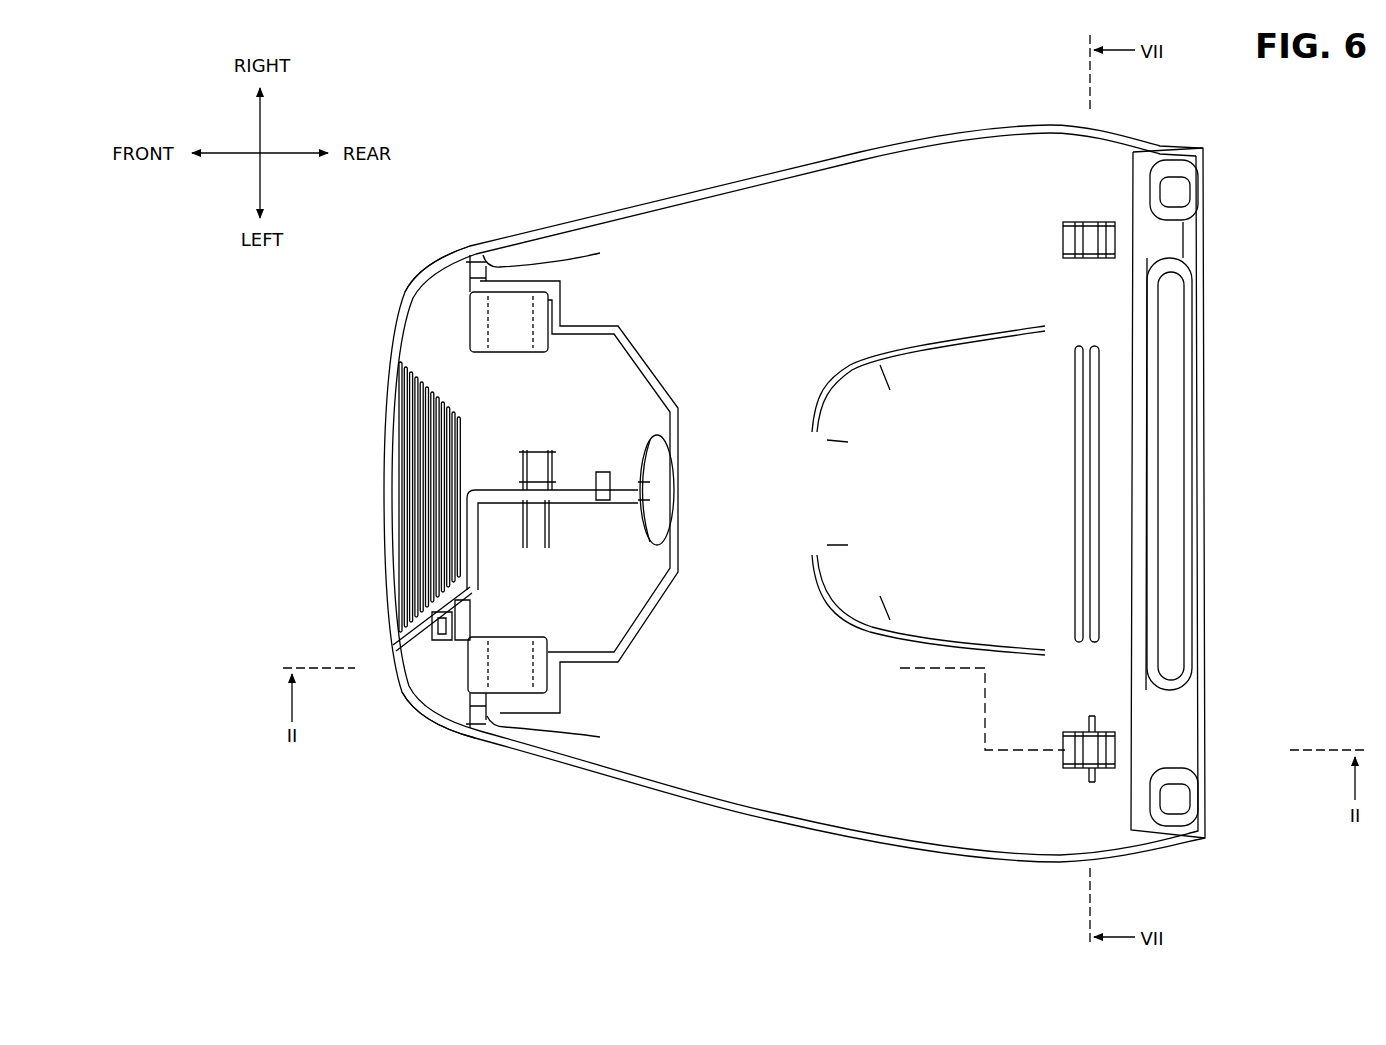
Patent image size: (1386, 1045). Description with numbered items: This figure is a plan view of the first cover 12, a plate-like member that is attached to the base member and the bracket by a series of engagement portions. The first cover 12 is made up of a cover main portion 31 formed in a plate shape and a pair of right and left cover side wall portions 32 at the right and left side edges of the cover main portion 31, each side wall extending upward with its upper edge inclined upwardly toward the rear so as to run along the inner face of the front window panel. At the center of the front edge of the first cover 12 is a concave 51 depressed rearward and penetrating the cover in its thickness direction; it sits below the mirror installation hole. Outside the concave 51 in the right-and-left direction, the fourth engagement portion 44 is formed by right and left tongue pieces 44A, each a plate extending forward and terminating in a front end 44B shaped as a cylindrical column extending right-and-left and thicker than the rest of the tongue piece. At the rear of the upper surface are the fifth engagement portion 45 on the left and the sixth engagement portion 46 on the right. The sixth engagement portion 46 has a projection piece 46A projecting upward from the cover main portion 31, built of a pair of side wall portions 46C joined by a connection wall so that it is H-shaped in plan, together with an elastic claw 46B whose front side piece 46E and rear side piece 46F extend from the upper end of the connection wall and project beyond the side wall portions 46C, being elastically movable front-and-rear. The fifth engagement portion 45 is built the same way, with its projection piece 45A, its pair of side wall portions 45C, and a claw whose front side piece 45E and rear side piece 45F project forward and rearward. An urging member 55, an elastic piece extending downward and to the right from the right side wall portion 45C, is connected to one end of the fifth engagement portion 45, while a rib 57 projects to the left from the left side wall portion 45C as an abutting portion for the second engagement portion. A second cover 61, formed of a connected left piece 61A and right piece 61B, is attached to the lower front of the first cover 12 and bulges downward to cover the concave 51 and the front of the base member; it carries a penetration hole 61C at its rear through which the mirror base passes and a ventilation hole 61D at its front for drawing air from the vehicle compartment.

The first cover 12 is at (851, 150).
The cover main portion 31 is at (912, 214).
The cover side wall portions 32 is at (725, 176).
The fourth engagement portion 44 is at (428, 505).
The tongue piece 44A is at (510, 352).
The front end 44B is at (465, 268).
The fifth engagement portion 45 is at (1122, 780).
The projection piece 45A is at (1063, 770).
The side wall portions 45C is at (1105, 750).
The front side piece 45E is at (1066, 750).
The rear side piece 45F is at (1176, 788).
The sixth engagement portion 46 is at (1115, 466).
The projection piece 46A is at (1062, 260).
The elastic claw 46B is at (1062, 232).
The side wall portions 46C is at (1100, 233).
The front side piece 46E is at (1068, 246).
The rear side piece 46F is at (1100, 243).
The concave 51 is at (602, 324).
The urging member 55 is at (1092, 716).
The rib 57 is at (1090, 782).
The second cover 61 is at (392, 670).
The left piece 61A is at (428, 690).
The right piece 61B is at (424, 316).
The penetration hole 61C is at (643, 462).
The ventilation hole 61D is at (400, 496).